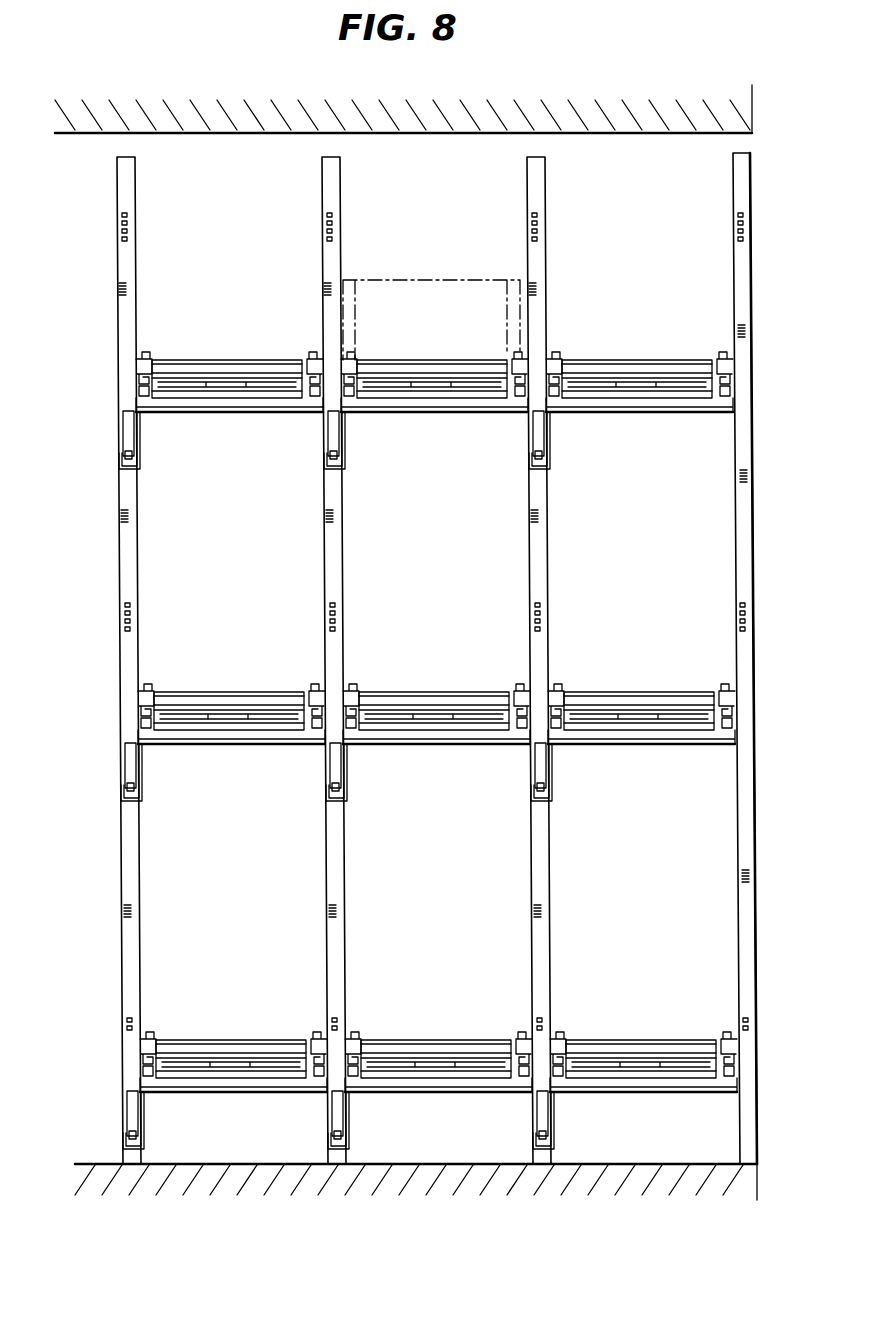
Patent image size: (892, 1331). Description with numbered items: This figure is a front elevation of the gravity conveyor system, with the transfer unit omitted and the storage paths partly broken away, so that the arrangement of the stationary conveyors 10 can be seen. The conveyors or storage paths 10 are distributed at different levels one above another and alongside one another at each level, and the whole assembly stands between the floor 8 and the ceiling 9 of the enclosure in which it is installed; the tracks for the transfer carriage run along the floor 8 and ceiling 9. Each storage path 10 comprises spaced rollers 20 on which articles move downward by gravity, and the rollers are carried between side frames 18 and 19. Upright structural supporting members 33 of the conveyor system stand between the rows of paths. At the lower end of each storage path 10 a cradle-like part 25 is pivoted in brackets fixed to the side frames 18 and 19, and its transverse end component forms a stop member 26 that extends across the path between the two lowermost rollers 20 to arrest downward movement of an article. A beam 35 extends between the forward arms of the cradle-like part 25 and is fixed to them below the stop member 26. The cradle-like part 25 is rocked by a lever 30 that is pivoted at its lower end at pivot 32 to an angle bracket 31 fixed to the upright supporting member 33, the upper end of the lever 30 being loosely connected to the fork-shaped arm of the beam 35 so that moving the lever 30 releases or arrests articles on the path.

The floor 8 is at (287, 1170).
The ceiling 9 is at (390, 118).
The stationary conveyor 10 is at (245, 358).
The side frame 18 is at (350, 280).
The side frame 19 is at (513, 280).
The roller 20 is at (468, 360).
The cradle-like part 25 is at (146, 354).
The stop member 26 is at (255, 384).
The lever 30 is at (124, 424).
The angle bracket 31 is at (127, 455).
The pivot 32 is at (143, 466).
The upright structural supporting member 33 is at (136, 180).
The beam 35 is at (245, 414).